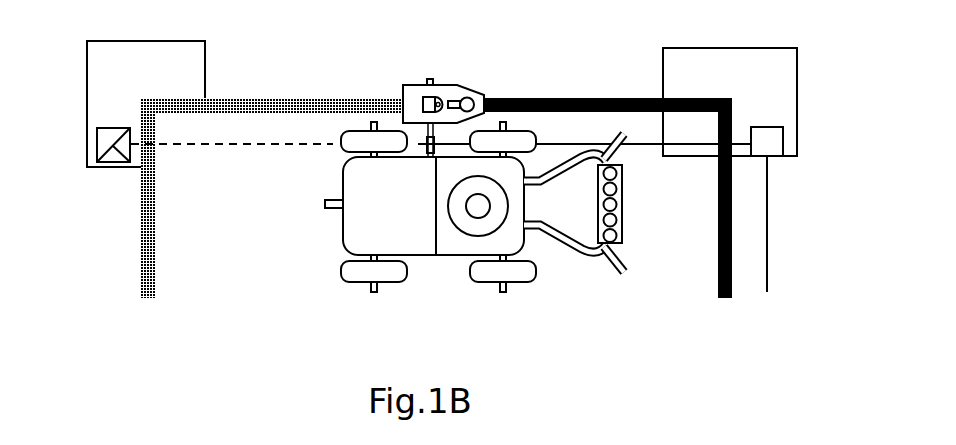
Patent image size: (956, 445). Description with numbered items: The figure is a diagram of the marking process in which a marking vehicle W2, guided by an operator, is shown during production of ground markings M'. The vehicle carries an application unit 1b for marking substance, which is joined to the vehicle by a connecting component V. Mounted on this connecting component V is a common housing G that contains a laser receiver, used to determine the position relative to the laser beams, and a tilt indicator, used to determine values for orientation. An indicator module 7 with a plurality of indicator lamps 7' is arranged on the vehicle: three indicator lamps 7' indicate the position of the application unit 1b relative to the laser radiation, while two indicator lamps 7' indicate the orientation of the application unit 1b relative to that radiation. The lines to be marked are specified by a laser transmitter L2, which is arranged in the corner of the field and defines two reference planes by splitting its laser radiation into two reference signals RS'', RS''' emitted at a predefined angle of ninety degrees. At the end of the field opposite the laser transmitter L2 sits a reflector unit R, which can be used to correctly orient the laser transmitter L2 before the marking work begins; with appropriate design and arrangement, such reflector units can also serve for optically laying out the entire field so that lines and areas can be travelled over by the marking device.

The application unit 1b is at (418, 98).
The reflector unit R is at (102, 142).
The connecting component V is at (427, 127).
The common housing G is at (427, 152).
The marking vehicle W2 is at (301, 255).
The reference signal RS'' is at (584, 96).
The laser transmitter L2 is at (764, 140).
The indicator module 7 is at (574, 247).
The indicator lamp 7' is at (644, 219).
The ground marking M' is at (634, 235).
The reference signal RS''' is at (795, 229).